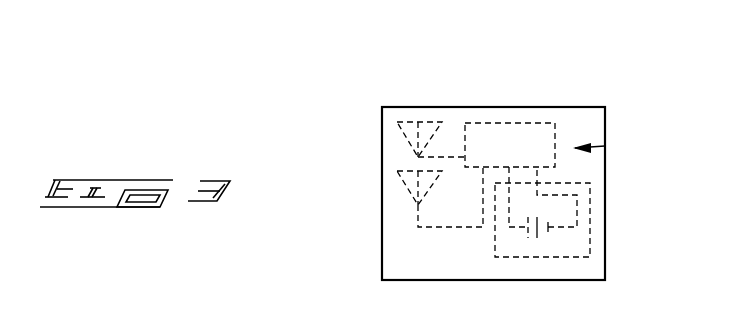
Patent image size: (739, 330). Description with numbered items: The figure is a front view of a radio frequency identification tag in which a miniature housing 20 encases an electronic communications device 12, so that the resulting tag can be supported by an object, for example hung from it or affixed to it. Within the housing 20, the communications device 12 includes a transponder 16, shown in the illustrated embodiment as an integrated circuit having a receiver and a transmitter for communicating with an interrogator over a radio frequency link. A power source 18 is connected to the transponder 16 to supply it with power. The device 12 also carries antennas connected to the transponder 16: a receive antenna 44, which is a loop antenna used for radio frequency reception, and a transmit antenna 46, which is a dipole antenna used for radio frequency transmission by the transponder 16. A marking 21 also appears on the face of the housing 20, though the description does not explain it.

The tag 12 is at (605, 145).
The circuit 16 is at (528, 123).
The power source 18 is at (590, 218).
The housing 20 is at (382, 242).
The indicia 21 is at (438, 269).
The antenna 44 is at (420, 122).
The antenna 46 is at (403, 189).